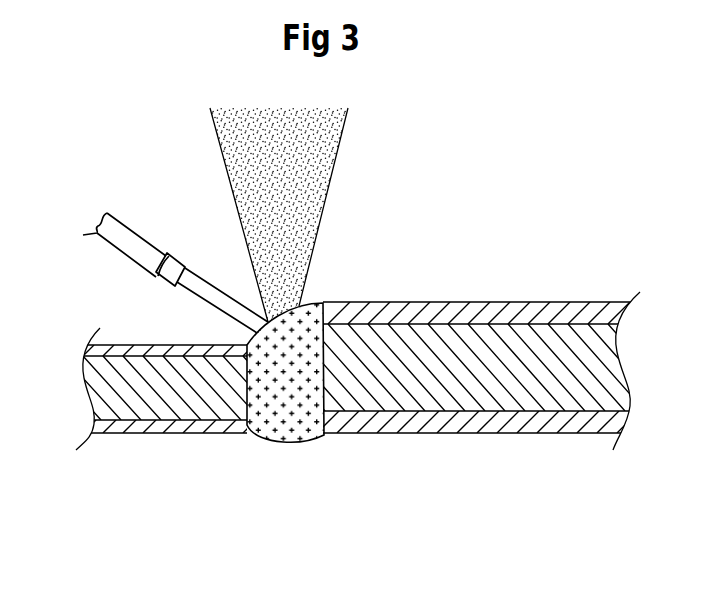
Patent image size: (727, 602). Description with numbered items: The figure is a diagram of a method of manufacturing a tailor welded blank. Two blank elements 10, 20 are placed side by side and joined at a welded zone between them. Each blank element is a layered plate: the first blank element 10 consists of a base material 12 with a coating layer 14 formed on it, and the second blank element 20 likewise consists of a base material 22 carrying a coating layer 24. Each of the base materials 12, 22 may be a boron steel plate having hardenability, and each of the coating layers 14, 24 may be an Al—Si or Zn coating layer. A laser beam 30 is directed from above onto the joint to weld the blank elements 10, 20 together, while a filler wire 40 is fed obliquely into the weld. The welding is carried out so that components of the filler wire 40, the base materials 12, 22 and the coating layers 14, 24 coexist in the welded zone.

The blank element 10 is at (185, 457).
The base material 12 is at (100, 392).
The coating layer 14 is at (97, 425).
The blank element 20 is at (523, 457).
The base material 22 is at (608, 372).
The coating layer 24 is at (603, 420).
The laser beam 30 is at (313, 210).
The filler wire 40 is at (217, 300).